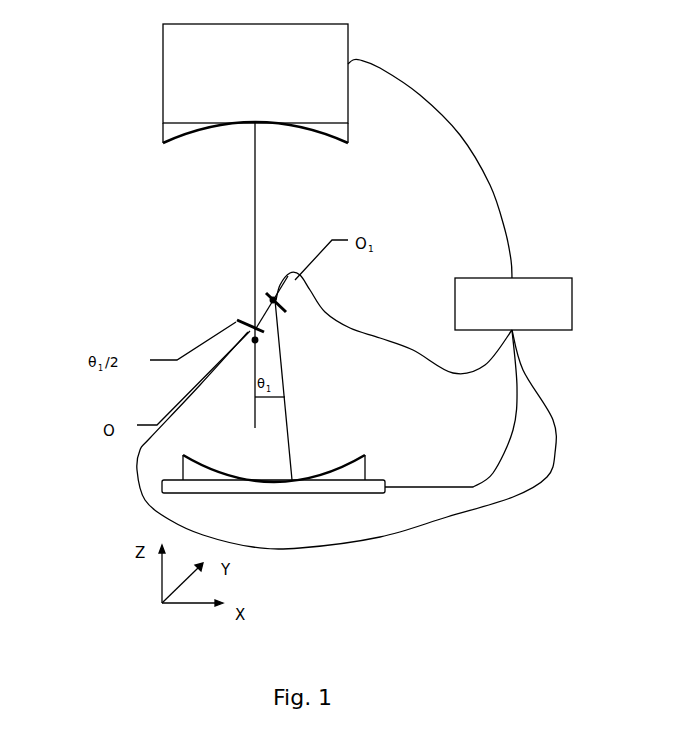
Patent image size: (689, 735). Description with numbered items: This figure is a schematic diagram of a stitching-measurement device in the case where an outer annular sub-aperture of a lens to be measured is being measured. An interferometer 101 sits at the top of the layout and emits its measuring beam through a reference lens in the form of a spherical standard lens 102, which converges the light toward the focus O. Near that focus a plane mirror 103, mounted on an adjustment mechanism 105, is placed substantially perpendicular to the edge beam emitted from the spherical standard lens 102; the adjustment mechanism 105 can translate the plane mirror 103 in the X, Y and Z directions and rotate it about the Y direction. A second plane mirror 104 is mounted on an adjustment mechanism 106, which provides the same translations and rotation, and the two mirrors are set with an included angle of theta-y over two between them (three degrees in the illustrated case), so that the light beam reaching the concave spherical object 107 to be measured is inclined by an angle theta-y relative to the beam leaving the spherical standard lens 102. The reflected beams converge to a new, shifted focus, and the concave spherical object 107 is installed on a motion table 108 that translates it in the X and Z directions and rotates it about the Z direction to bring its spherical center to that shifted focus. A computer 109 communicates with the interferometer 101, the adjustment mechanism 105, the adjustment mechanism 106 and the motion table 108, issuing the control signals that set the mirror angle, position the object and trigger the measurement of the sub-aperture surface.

The interferometer 101 is at (202, 73).
The spherical standard lens 102 is at (195, 122).
The plane mirror 103 is at (307, 344).
The plane mirror 104 is at (325, 300).
The adjustment mechanism 105 is at (311, 359).
The adjustment mechanism 106 is at (326, 289).
The concave spherical object to be measured 107 is at (172, 462).
The motion table 108 is at (168, 500).
The computer 109 is at (513, 304).